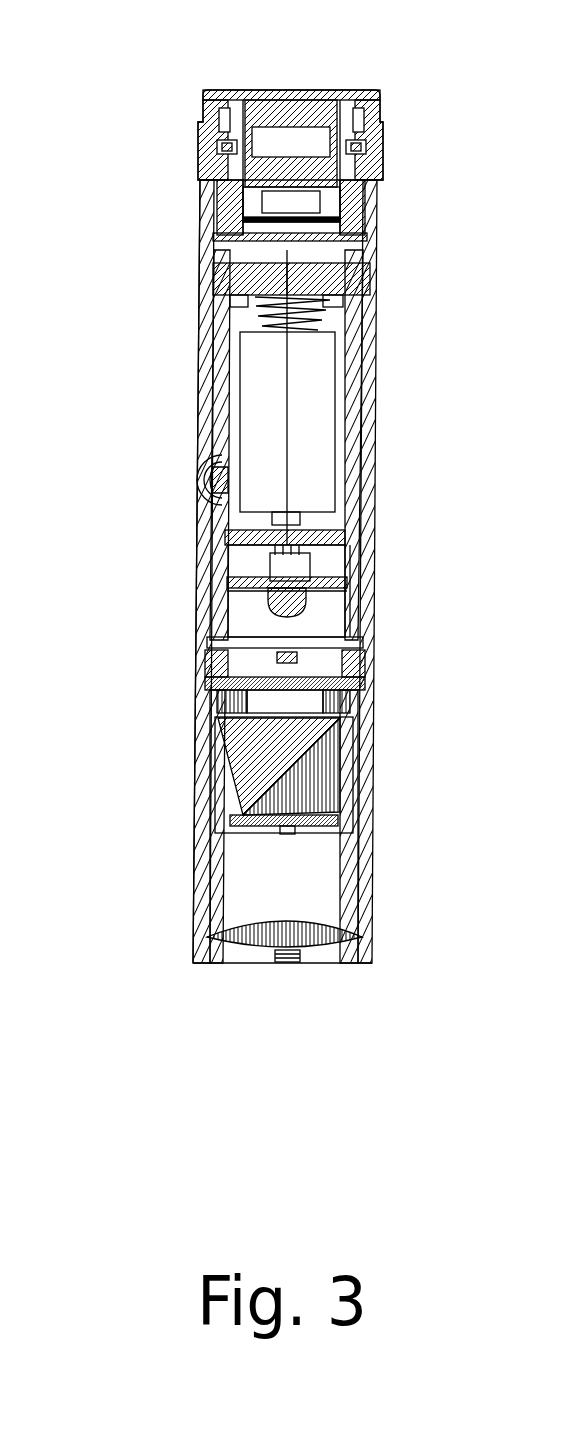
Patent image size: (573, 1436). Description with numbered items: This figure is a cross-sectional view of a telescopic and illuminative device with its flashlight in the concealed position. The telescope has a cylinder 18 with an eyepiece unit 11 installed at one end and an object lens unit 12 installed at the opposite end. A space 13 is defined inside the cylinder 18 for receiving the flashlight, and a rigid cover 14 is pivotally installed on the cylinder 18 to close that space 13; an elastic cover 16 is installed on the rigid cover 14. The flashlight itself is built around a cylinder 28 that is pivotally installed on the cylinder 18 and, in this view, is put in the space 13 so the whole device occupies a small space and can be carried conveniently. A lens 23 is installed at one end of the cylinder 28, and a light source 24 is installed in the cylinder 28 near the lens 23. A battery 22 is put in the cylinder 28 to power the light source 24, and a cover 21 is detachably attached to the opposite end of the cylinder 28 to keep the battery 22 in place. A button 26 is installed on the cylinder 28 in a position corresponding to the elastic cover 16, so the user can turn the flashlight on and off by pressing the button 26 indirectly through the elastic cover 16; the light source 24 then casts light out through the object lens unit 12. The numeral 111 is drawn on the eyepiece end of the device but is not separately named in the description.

The eyepiece unit 11 is at (352, 65).
The cap 111 is at (378, 105).
The object lens unit 12 is at (205, 970).
The space 13 is at (233, 248).
The rigid cover 14 is at (205, 328).
The elastic cover 16 is at (197, 467).
The cylinder 18 is at (207, 865).
The cover 21 is at (337, 276).
The battery 22 is at (316, 408).
The lens 23 is at (372, 617).
The light source 24 is at (347, 578).
The button 26 is at (190, 482).
The cylinder 28 is at (352, 360).